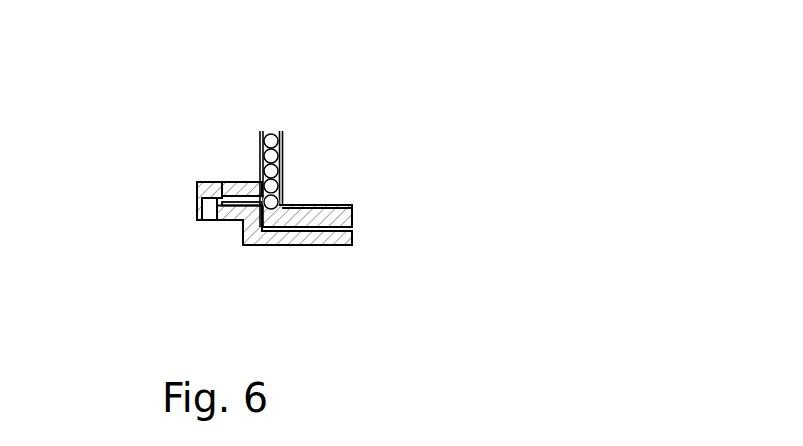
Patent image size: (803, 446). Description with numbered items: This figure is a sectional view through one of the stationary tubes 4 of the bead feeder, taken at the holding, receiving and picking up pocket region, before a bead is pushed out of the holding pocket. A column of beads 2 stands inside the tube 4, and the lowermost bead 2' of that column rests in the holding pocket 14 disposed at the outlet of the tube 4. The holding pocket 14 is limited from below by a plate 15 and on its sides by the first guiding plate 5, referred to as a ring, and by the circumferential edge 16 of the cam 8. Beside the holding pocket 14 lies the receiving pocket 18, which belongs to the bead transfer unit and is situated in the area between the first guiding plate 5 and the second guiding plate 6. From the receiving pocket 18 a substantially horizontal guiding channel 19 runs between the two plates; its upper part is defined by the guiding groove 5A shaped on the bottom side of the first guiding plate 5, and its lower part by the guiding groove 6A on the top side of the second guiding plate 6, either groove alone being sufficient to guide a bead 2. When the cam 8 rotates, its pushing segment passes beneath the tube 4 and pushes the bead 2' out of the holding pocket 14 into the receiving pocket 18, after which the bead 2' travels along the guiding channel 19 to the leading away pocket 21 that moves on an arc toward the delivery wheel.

The bead 2 is at (298, 113).
The lowermost bead 2' is at (311, 157).
The tube 4 is at (262, 131).
The first guiding plate 5 is at (248, 181).
The guiding groove 5A is at (223, 182).
The second guiding plate 6 is at (197, 190).
The guiding groove 6A is at (240, 220).
The cam 8 is at (352, 206).
The holding pocket 14 is at (300, 245).
The plate 15 is at (348, 214).
The circumferential edge 16 is at (286, 203).
The receiving pocket 18 is at (252, 230).
The guiding channel 19 is at (242, 218).
The leading away pocket 21 is at (217, 210).